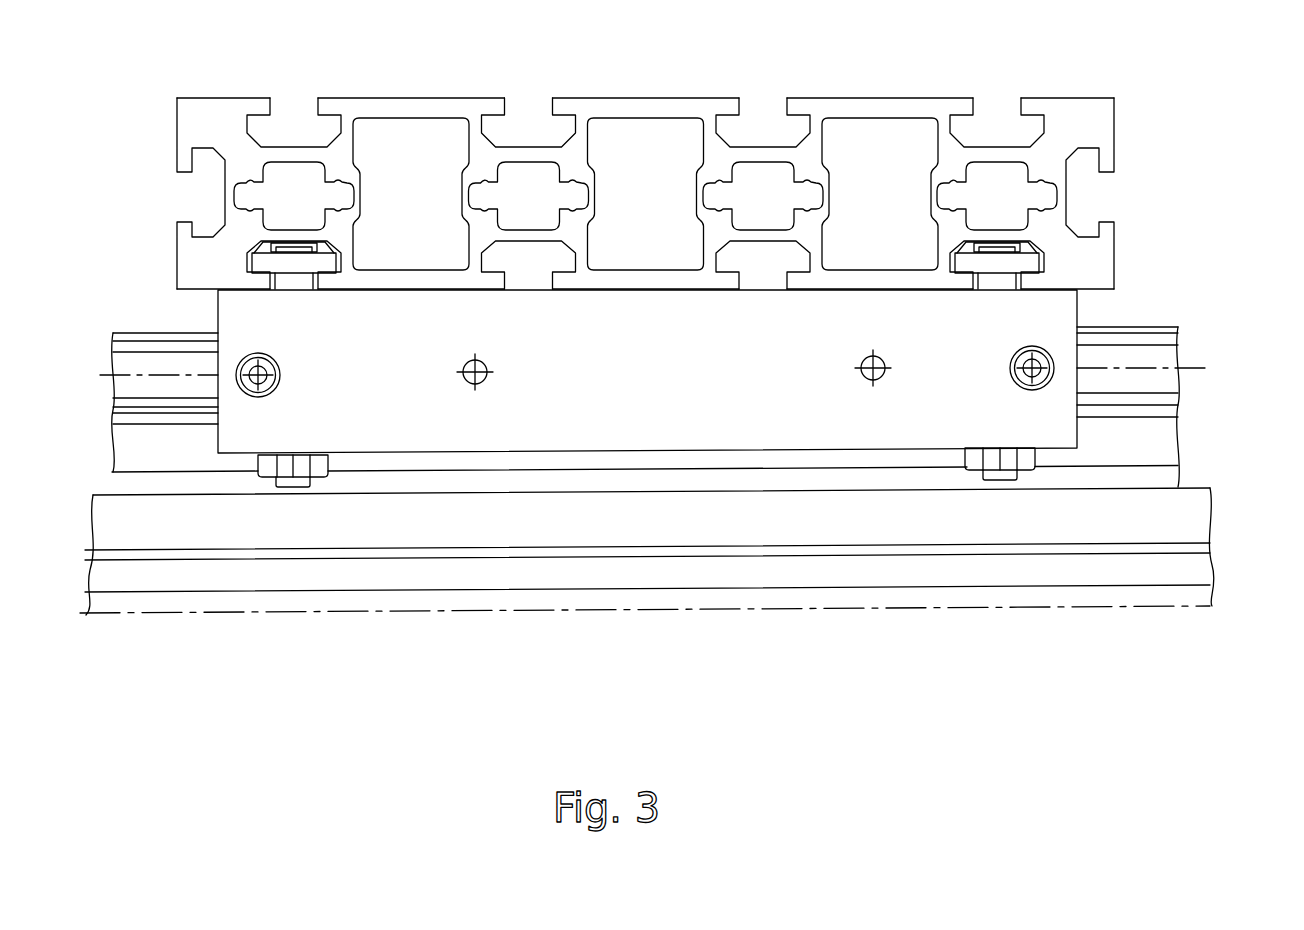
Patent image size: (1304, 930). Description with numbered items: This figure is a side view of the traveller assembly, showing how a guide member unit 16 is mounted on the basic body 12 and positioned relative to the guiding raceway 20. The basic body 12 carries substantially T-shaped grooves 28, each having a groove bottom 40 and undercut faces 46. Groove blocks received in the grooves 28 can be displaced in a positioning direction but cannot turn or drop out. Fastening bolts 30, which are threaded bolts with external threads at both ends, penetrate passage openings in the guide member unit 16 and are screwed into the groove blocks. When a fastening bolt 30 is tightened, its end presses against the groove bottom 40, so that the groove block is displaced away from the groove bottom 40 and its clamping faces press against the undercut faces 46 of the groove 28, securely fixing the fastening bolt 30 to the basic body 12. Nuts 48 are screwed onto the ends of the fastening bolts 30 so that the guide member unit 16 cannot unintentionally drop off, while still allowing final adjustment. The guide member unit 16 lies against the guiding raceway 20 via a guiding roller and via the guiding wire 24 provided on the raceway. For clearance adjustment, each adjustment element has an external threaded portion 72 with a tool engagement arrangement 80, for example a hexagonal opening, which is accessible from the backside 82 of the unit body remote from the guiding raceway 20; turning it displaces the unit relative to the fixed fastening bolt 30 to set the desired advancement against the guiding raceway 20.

The basic body 12 is at (645, 148).
The guide member unit 16 is at (1080, 315).
The guiding raceway 20 is at (1180, 443).
The guiding wire 24 is at (1207, 370).
The groove 28 is at (262, 247).
The fastening bolt 30 is at (293, 487).
The groove bottom 40 is at (993, 146).
The undercut face 46 is at (740, 122).
The nut 48 is at (330, 462).
The external threaded portion 72 is at (237, 392).
The tool engagement arrangement 80 is at (237, 363).
The backside 82 is at (740, 418).